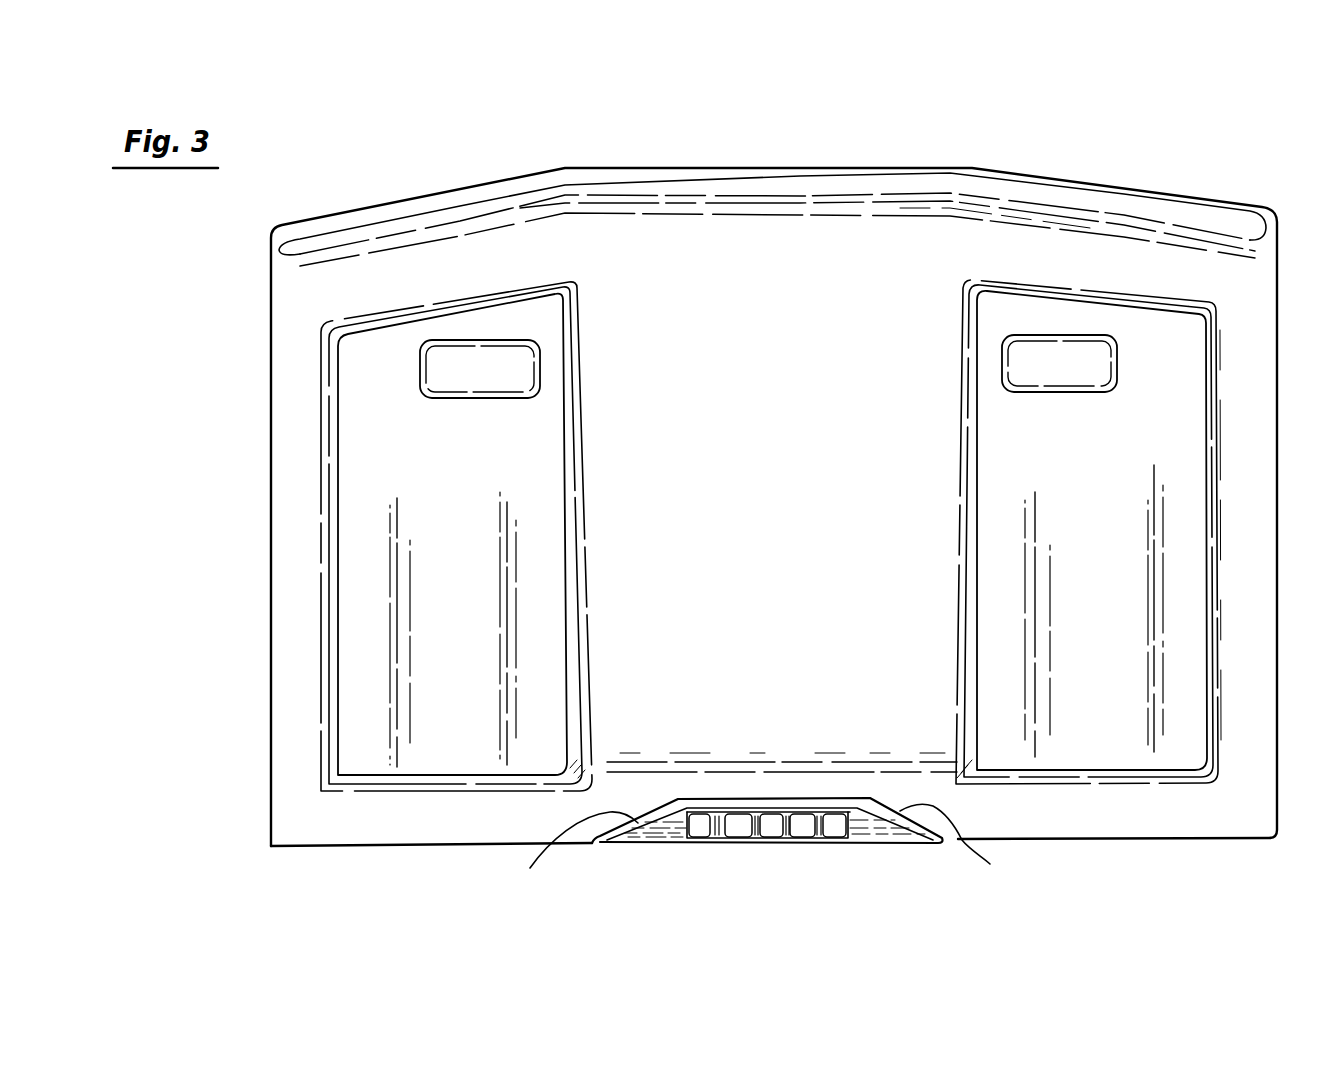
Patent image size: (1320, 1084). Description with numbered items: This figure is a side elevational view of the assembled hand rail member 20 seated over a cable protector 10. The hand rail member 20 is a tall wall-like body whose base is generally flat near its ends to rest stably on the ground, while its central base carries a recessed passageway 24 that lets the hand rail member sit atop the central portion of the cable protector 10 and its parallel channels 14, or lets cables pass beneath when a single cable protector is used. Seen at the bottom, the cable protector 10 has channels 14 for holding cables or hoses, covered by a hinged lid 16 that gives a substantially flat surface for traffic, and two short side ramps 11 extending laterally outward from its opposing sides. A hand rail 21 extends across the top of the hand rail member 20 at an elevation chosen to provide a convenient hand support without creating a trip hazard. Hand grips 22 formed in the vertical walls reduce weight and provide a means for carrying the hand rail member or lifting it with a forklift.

The cable protector 10 is at (767, 822).
The side ramps 11 is at (757, 853).
The parallel channels 14 is at (737, 823).
The hinged lid 16 is at (805, 808).
The hand rail member 20 is at (587, 150).
The hand rail 21 is at (838, 176).
The hand grips 22 is at (474, 378).
The recessed passageway 24 is at (763, 792).